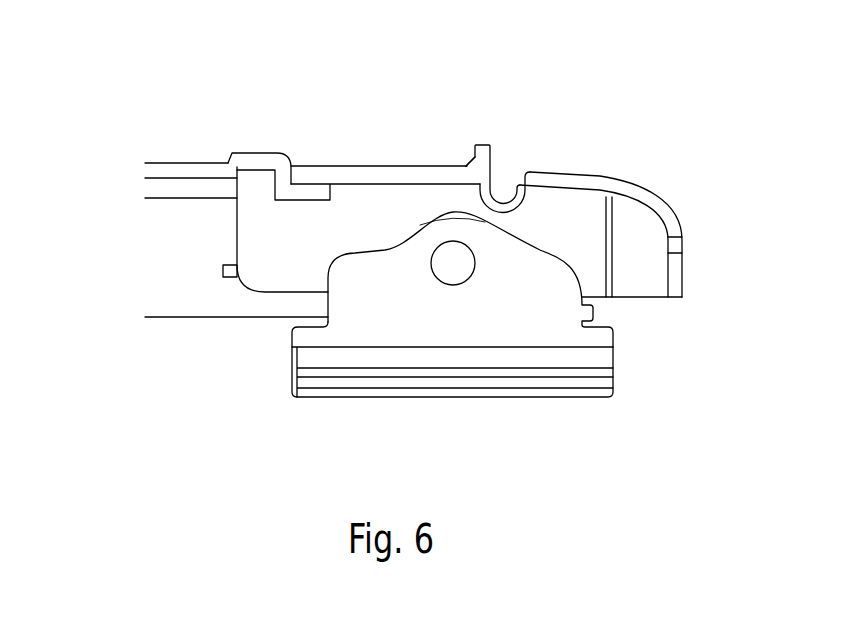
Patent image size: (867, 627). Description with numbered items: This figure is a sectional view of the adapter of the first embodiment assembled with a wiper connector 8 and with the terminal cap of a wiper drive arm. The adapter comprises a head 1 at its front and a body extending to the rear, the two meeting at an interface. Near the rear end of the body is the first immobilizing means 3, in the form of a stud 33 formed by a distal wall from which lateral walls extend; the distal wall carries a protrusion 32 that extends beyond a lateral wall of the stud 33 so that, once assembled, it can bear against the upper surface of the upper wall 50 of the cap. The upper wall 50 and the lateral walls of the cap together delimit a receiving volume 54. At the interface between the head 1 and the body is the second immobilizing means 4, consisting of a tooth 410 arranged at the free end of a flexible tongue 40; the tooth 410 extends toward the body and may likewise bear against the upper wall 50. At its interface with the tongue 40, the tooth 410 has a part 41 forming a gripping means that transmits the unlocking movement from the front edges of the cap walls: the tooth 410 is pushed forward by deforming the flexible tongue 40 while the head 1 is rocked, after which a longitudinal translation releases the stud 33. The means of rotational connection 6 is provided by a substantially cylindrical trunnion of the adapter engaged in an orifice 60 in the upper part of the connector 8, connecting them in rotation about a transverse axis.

The head 1 is at (640, 178).
The first immobilizing means 3 is at (342, 154).
The second immobilizing means 4 is at (479, 116).
The means of rotational connection 6 is at (504, 345).
The connector 8 is at (333, 338).
The protrusion 32 is at (227, 157).
The stud 33 is at (252, 153).
The flexible tongue 40 is at (490, 193).
The part forming a gripping means 41 is at (480, 153).
The tooth 410 is at (468, 163).
The upper wall 50 is at (182, 167).
The receiving volume 54 is at (203, 251).
The orifice 60 is at (468, 283).